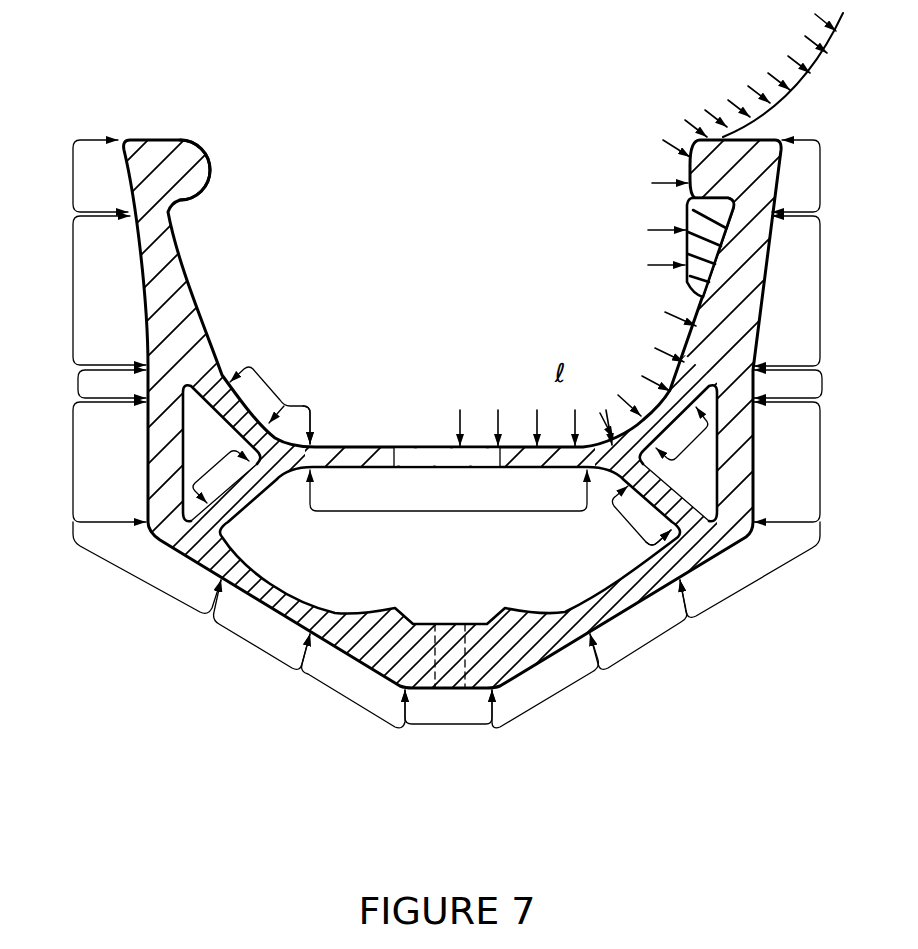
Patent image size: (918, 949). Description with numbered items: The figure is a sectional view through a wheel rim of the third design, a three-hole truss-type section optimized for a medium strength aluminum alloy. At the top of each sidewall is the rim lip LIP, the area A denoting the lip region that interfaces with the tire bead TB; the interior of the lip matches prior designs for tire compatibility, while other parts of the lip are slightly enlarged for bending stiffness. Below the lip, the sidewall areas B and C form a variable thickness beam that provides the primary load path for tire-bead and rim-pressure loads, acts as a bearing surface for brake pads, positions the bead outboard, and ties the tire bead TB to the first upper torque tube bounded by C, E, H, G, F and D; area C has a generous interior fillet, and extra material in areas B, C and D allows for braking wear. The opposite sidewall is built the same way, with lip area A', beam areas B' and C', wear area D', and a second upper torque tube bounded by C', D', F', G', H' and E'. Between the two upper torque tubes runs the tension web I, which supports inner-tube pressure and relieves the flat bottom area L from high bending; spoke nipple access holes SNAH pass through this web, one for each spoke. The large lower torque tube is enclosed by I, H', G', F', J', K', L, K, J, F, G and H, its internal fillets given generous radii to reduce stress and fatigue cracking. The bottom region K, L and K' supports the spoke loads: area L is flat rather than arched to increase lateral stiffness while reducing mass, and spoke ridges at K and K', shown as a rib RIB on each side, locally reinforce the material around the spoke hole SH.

The rim lip area A is at (89, 176).
The sidewall area B is at (98, 290).
The sidewall area C is at (98, 384).
The sidewall area D is at (98, 462).
The web area E is at (270, 403).
The lower wall area F is at (147, 567).
The diagonal web area G is at (221, 473).
The web junction area H is at (318, 418).
The tension web area I is at (448, 504).
The lower shell area J is at (262, 624).
The spoke ridge area K is at (353, 681).
The flat spoke bed area L is at (448, 725).
The rim lip area A' is at (815, 176).
The sidewall area B' is at (806, 291).
The sidewall area C' is at (806, 384).
The sidewall area D' is at (806, 462).
The web area E' is at (685, 440).
The lower wall area F' is at (750, 569).
The diagonal web area G' is at (642, 547).
The web junction area H' is at (631, 515).
The lower shell area J' is at (638, 628).
The spoke ridge area K' is at (545, 683).
The rim lip LIP is at (215, 152).
The spoke nipple access hole SNAH is at (443, 445).
The tire bead TB is at (705, 254).
The rib RIB is at (397, 606).
The spoke hole SH is at (459, 690).